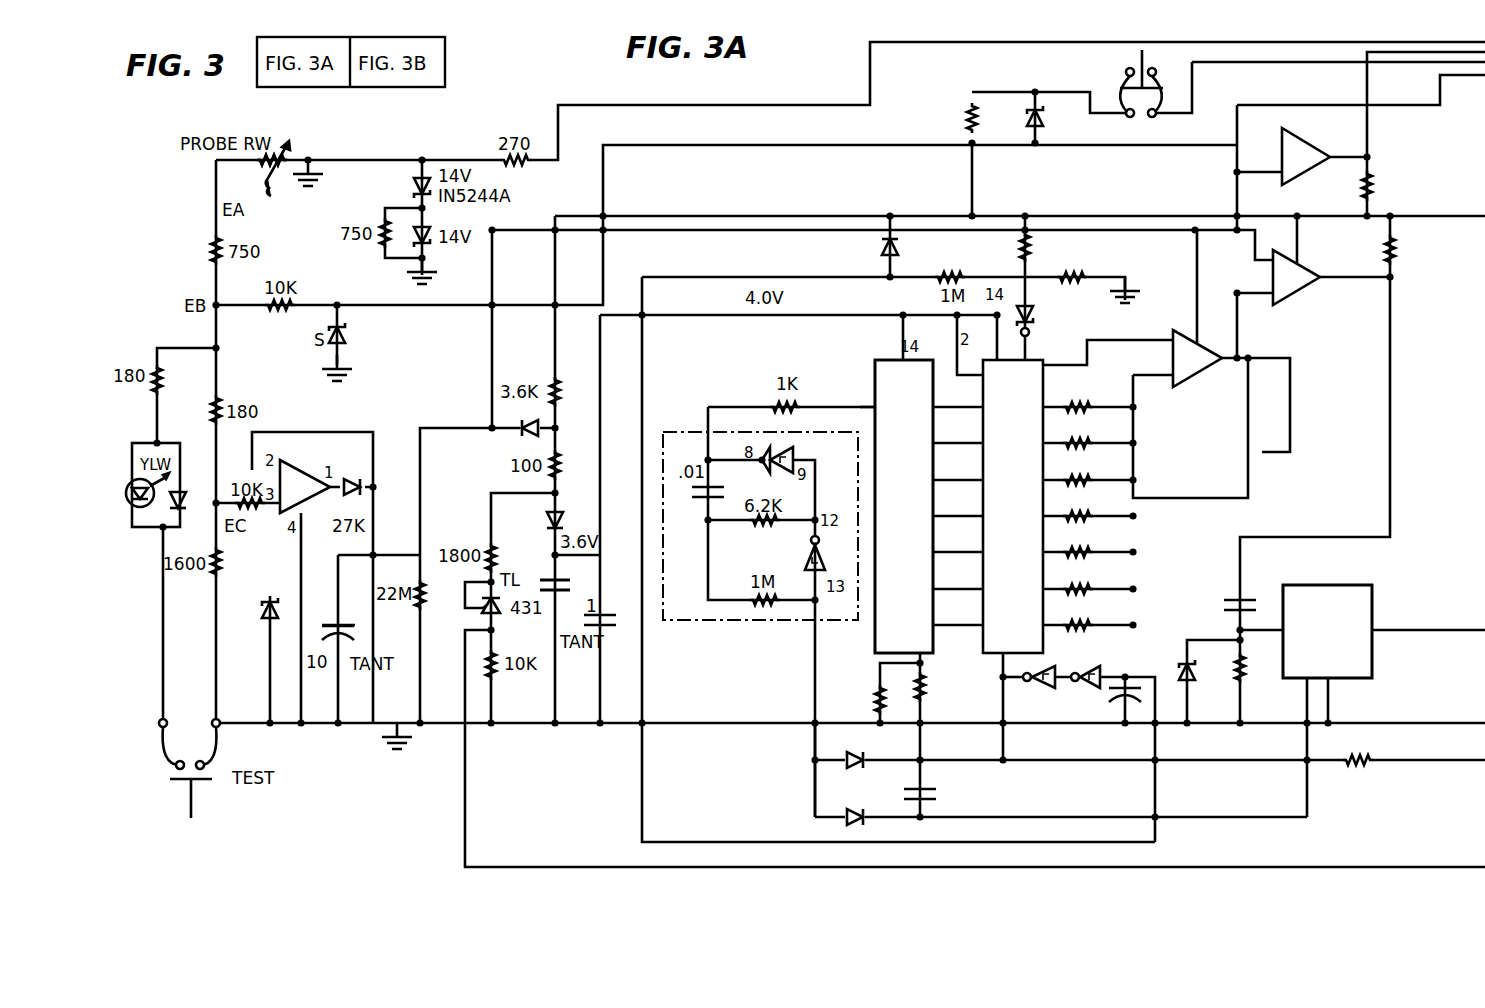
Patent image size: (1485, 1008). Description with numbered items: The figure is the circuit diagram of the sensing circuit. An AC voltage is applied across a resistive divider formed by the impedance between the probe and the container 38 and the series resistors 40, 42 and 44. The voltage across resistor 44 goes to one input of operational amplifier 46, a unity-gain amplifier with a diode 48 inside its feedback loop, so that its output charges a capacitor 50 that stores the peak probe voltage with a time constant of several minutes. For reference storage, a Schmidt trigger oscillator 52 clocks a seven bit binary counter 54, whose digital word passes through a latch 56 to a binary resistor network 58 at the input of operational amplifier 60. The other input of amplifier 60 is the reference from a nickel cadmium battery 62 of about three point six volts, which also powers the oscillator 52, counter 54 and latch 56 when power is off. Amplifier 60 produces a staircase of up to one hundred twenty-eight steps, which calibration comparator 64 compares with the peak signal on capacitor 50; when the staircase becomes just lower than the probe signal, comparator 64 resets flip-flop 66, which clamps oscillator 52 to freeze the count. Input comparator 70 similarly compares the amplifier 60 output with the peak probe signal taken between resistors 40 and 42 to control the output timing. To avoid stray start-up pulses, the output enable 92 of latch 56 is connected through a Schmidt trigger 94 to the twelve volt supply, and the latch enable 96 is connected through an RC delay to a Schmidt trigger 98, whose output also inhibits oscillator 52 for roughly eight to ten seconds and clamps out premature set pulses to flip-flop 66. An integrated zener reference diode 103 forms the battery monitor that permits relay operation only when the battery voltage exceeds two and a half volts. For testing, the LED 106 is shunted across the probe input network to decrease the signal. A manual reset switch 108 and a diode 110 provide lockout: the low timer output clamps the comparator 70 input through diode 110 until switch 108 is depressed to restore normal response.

The probe and container impedance 38 is at (269, 187).
The resistor 40 is at (212, 252).
The resistor 42 is at (214, 400).
The resistor 44 is at (210, 578).
The operational amplifier 46 is at (312, 452).
The diode 48 is at (360, 482).
The capacitor 50 is at (325, 622).
The Schmidt trigger oscillator 52 is at (690, 428).
The 7 bit binary counter 54 is at (875, 350).
The latch 56 is at (1048, 666).
The binary resistor network 58 is at (1134, 470).
The operational amplifier 60 is at (1198, 376).
The battery 62 is at (572, 582).
The calibration comparator 64 is at (1297, 296).
The flip-flop 66 is at (1328, 586).
The input comparator 70 is at (1305, 140).
The output enable 92 is at (1030, 340).
The Schmidt trigger 94 is at (1034, 314).
The latch enable 96 is at (998, 680).
The Schmidt trigger 98 is at (1092, 666).
The integrated zener reference diode 103 is at (500, 612).
The LED 106 is at (136, 508).
The manual reset switch 108 is at (1110, 88).
The diode 110 is at (1044, 116).